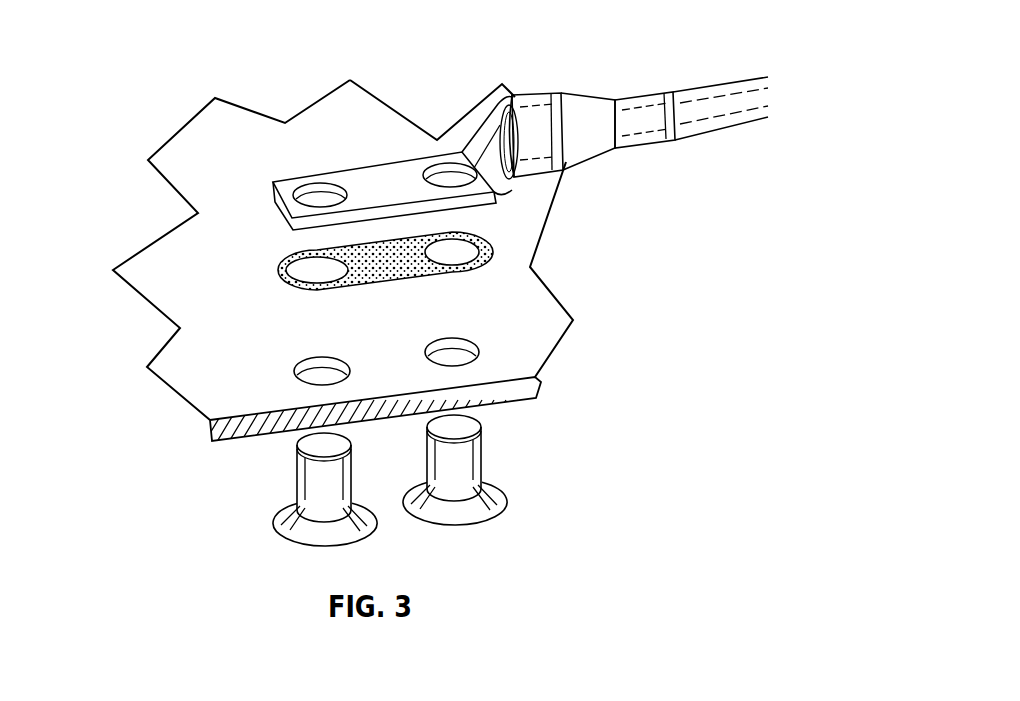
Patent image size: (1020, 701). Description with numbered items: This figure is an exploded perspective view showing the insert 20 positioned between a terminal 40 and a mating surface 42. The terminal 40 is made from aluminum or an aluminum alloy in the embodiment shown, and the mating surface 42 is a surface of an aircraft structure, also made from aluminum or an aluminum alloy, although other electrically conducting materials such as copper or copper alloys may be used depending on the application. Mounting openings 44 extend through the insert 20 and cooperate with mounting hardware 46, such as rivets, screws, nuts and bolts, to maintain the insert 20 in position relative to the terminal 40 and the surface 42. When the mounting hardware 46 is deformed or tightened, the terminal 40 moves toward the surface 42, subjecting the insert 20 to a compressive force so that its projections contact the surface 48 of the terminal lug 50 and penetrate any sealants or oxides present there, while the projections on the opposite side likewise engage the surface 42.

The insert 20 is at (538, 247).
The terminal 40 is at (393, 132).
The mating surface 42 is at (244, 353).
The mounting openings 44 is at (308, 270).
The mounting hardware 46 is at (297, 475).
The surface of the terminal lug 48 is at (480, 208).
The terminal lug 50 is at (353, 183).